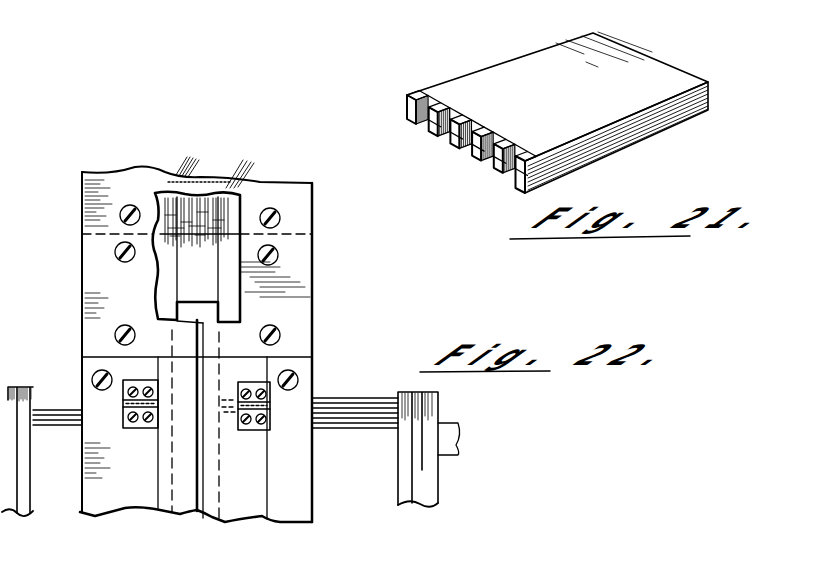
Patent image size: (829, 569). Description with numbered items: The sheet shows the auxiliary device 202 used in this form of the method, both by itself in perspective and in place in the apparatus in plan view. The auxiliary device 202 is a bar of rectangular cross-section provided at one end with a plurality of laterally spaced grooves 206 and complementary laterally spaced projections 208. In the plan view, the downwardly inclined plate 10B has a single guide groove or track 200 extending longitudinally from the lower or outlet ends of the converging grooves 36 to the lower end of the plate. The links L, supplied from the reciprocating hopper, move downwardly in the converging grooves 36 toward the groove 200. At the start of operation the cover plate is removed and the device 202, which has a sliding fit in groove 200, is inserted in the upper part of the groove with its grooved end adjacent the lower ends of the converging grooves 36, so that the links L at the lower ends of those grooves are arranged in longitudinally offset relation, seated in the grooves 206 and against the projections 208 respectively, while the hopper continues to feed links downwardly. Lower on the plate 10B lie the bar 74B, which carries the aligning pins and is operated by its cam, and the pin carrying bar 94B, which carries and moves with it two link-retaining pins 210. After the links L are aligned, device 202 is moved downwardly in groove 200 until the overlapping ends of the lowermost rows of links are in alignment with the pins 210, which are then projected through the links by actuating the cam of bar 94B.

In FIG. 21, the auxiliary device 202 is at (490, 56).
In FIG. 22, the auxiliary device 202 is at (210, 279).
In FIG. 21, the laterally spaced grooves 206 is at (495, 135).
In FIG. 21, the laterally spaced projections 208 is at (432, 133).
In FIG. 22, the downwardly inclined plate 10B is at (318, 219).
In FIG. 22, the guide groove 200 is at (214, 322).
In FIG. 22, the converging grooves 36 is at (193, 158).
In FIG. 22, the links L is at (242, 165).
In FIG. 22, the bar 74B is at (36, 372).
In FIG. 22, the link-retaining pins 210 is at (347, 403).
In FIG. 22, the pin carrying bar 94B is at (446, 399).